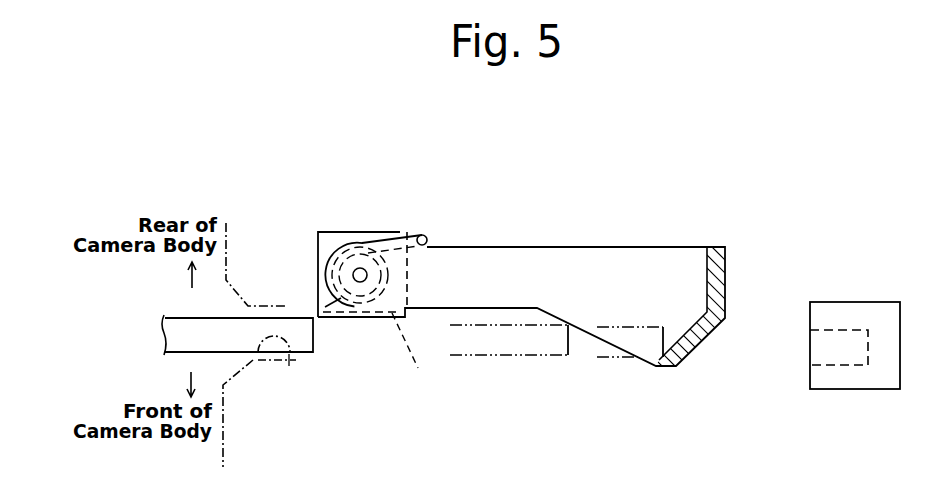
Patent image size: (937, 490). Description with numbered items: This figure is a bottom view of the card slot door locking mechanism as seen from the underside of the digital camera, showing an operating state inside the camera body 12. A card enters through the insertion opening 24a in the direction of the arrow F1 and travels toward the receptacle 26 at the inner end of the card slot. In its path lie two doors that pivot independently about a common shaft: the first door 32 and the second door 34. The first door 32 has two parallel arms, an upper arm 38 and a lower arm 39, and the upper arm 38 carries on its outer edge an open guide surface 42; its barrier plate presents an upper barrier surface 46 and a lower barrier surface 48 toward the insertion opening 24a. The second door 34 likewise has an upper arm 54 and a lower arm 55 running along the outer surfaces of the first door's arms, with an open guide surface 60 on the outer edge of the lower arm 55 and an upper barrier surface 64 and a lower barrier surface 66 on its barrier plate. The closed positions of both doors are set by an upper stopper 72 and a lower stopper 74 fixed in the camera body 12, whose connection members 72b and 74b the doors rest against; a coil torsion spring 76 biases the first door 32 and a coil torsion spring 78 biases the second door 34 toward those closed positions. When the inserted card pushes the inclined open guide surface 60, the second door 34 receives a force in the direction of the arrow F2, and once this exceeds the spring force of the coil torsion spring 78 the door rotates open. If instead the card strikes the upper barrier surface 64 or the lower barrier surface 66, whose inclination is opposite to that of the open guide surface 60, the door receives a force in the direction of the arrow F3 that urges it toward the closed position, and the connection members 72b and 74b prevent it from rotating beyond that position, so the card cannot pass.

The camera body 12 is at (228, 412).
The insertion opening 24a is at (289, 358).
The receptacle 26 is at (862, 389).
The second door 34 is at (565, 252).
The first door 32 is at (565, 252).
The upper arm 38 is at (575, 204).
The lower arm 39 is at (575, 204).
The upper arm 54 is at (588, 170).
The lower arm 55 is at (575, 204).
The open guide surface 42 is at (605, 343).
The open guide surface 60 is at (556, 368).
The upper barrier surface 46 is at (770, 303).
The lower barrier surface 48 is at (694, 330).
The upper barrier surface 64 is at (770, 303).
The lower barrier surface 66 is at (770, 303).
The upper stopper 72 is at (320, 233).
The lower stopper 74 is at (347, 250).
The connection member 72b is at (443, 357).
The connection member 74b is at (443, 357).
The coil torsion spring 76 is at (360, 252).
The coil torsion spring 78 is at (379, 245).
The card insertion direction arrow F1 is at (384, 341).
The opening force arrow F2 is at (618, 240).
The closing force arrow F3 is at (682, 367).